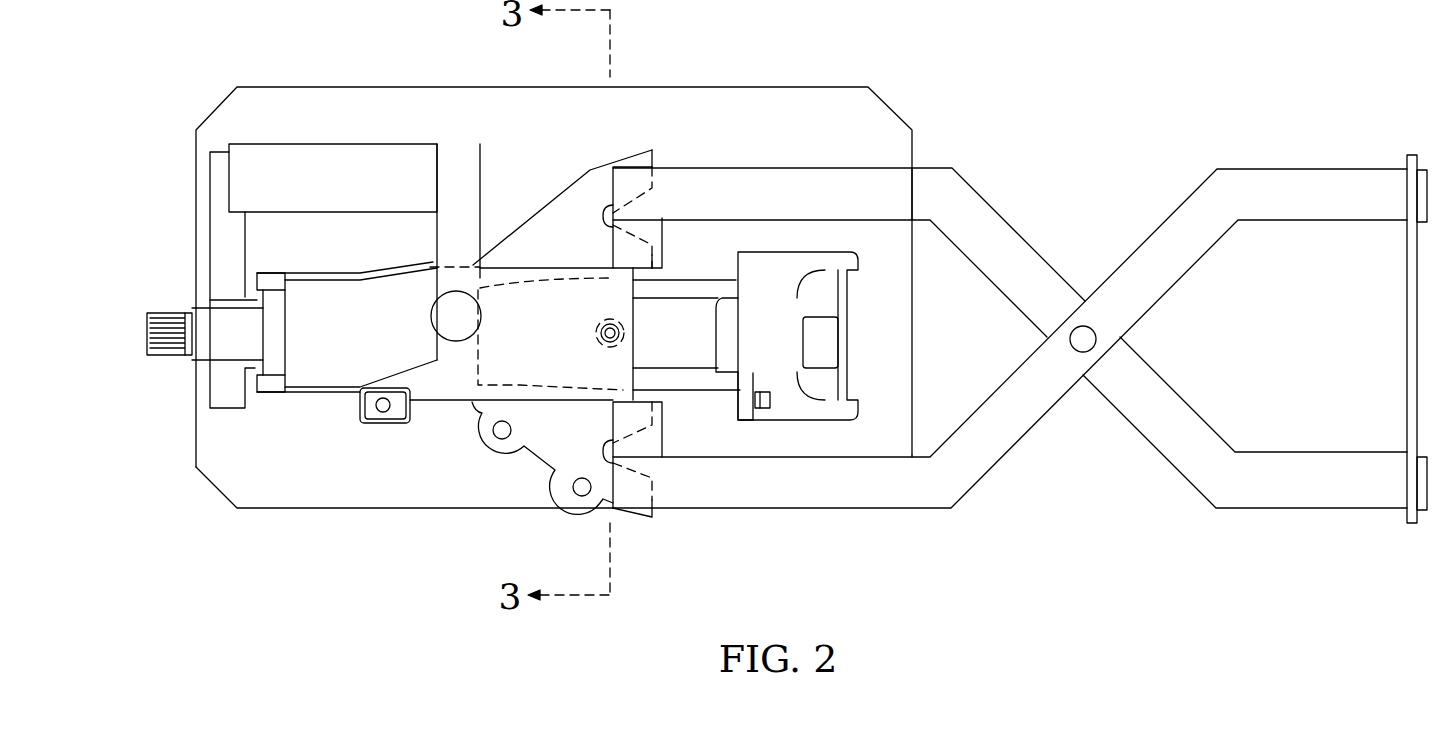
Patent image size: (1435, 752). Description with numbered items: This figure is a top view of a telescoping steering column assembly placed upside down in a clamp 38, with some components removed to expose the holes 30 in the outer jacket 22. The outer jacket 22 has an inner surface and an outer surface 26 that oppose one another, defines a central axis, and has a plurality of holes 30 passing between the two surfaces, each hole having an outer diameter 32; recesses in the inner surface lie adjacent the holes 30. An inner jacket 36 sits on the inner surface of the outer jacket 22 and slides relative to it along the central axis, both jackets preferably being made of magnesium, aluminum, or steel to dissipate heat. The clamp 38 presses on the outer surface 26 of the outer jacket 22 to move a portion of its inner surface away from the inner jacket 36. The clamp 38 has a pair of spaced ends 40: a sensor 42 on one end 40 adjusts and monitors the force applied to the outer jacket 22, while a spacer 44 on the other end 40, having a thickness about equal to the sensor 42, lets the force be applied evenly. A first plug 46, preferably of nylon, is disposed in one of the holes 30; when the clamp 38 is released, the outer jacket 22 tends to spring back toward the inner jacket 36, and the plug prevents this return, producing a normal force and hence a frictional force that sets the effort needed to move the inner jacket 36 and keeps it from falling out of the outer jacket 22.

The outer jacket 22 is at (483, 393).
The outer surface 26 is at (512, 268).
The holes 30 is at (603, 325).
The outer diameter 32 is at (603, 344).
The inner jacket 36 is at (737, 300).
The clamp 38 is at (1282, 182).
The ends 40 is at (647, 209).
The sensor 42 is at (624, 322).
The spacer 44 is at (662, 432).
The first plug 46 is at (727, 286).